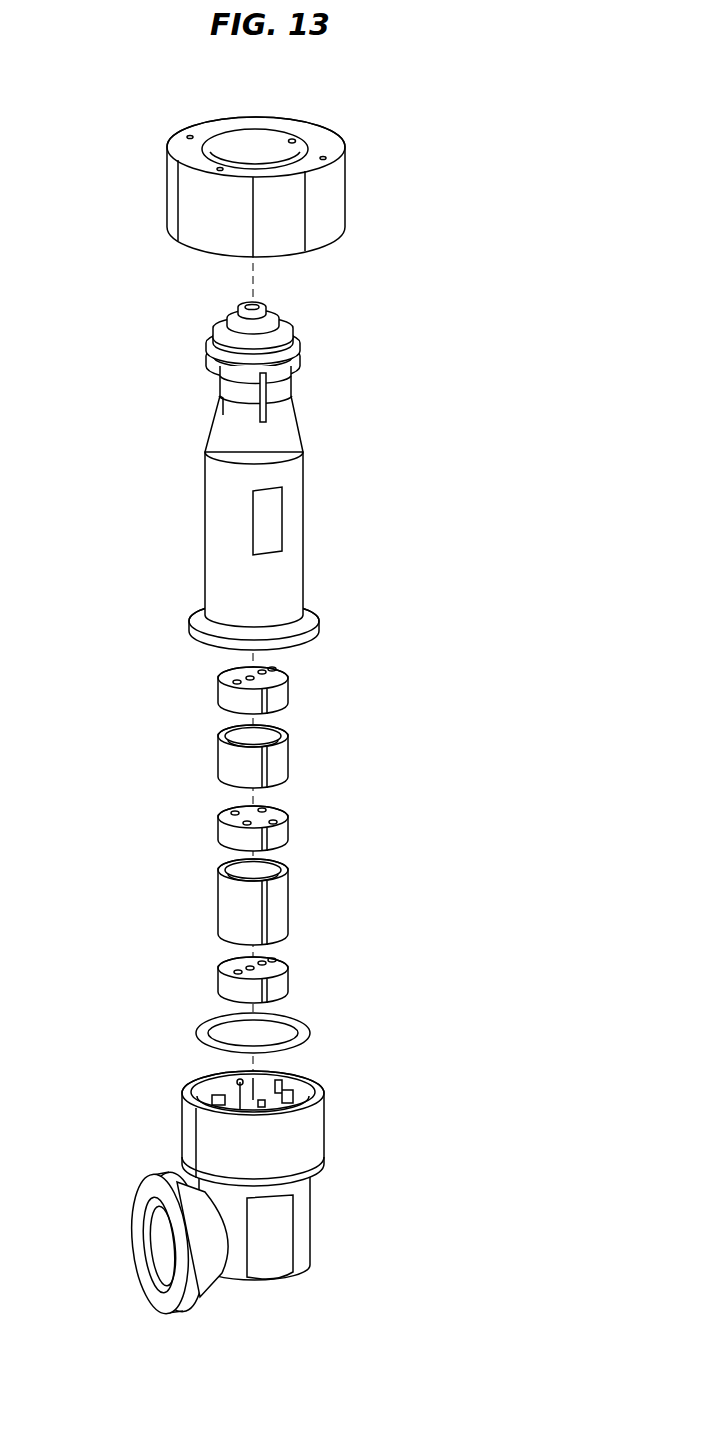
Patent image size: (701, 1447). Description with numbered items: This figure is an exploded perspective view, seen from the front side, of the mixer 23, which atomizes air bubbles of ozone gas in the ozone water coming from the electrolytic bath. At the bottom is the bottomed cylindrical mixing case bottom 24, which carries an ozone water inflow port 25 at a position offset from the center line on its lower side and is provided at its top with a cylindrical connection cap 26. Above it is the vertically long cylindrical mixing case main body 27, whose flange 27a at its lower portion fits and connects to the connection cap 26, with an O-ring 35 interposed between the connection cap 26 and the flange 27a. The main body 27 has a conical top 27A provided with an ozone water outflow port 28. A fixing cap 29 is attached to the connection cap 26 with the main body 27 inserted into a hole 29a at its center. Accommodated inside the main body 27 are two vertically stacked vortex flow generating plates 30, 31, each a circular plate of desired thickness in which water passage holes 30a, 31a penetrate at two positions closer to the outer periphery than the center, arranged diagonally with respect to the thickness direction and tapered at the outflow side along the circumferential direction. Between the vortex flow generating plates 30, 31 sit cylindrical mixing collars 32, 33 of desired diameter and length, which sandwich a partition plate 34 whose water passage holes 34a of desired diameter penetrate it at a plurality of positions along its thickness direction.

The mixer 23 is at (332, 366).
The mixing case bottom 24 is at (303, 1220).
The ozone water inflow port 25 is at (155, 1280).
The connection cap 26 is at (302, 1133).
The mixing case main body 27 is at (293, 523).
The conical top 27A is at (282, 441).
The flange 27a is at (310, 616).
The ozone water outflow port 28 is at (258, 303).
The fixing cap 29 is at (320, 204).
The hole 29a is at (293, 139).
The vortex flow generating plate 30 is at (278, 988).
The water passage holes 30a is at (237, 970).
The vortex flow generating plate 31 is at (278, 694).
The water passage holes 31a is at (236, 680).
The mixing collar 32 is at (283, 900).
The mixing collar 33 is at (277, 756).
The partition plate 34 is at (278, 833).
The water passage holes 34a is at (233, 812).
The O-ring 35 is at (298, 1038).